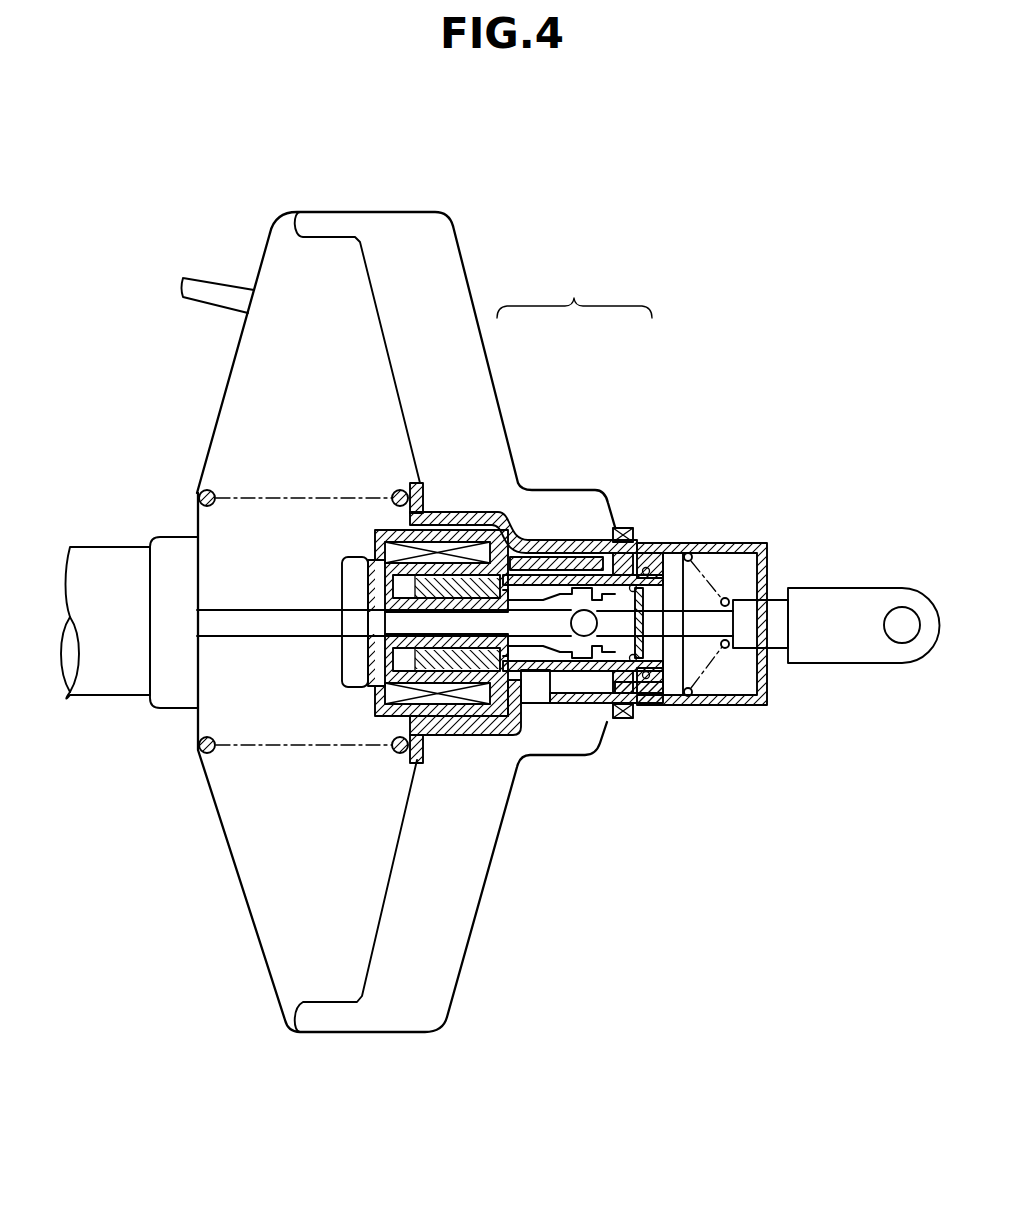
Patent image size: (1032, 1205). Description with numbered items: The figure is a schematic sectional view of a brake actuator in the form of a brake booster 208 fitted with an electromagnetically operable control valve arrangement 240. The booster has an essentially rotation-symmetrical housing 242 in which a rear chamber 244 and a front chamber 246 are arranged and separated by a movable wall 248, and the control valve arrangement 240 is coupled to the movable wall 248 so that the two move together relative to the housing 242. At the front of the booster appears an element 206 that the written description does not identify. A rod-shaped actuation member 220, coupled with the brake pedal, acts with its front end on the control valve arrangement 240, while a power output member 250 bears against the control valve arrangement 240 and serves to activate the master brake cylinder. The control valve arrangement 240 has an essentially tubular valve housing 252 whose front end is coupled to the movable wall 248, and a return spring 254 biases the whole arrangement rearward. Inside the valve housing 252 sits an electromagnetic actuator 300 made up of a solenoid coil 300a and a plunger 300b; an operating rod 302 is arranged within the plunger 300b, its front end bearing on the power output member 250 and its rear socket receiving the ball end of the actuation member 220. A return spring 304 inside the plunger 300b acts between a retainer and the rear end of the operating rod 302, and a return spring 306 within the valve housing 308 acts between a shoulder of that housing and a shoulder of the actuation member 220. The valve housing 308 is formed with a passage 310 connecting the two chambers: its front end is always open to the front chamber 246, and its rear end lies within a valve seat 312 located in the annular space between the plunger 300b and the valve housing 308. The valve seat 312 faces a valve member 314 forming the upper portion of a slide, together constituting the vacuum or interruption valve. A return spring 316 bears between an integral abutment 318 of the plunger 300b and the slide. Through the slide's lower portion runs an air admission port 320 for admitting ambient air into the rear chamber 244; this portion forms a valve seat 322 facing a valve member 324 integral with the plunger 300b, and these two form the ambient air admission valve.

The master cylinder 206 is at (97, 562).
The brake booster 208 is at (580, 232).
The rod-shaped actuation member 220 is at (855, 590).
The control valve arrangement 240 is at (682, 505).
The housing 242 is at (368, 212).
The rear chamber 244 is at (443, 264).
The front chamber 246 is at (262, 372).
The movable wall 248 is at (384, 917).
The power output member 250 is at (204, 620).
The valve housing 252 is at (528, 543).
The return spring 254 is at (202, 493).
The electromagnetic actuator 300 is at (497, 477).
The solenoid coil 300a is at (476, 582).
The plunger 300b is at (512, 612).
The operating rod 302 is at (552, 575).
The return spring 304 is at (663, 686).
The return spring 306 is at (692, 694).
The valve housing 308 is at (483, 737).
The passage 310 is at (572, 557).
The valve seat 312 is at (625, 543).
The valve member 314 is at (648, 556).
The return spring 316 is at (662, 560).
The integral abutment 318 is at (695, 556).
The air admission port 320 is at (614, 717).
The valve seat 322 is at (645, 700).
The valve member 324 is at (557, 683).